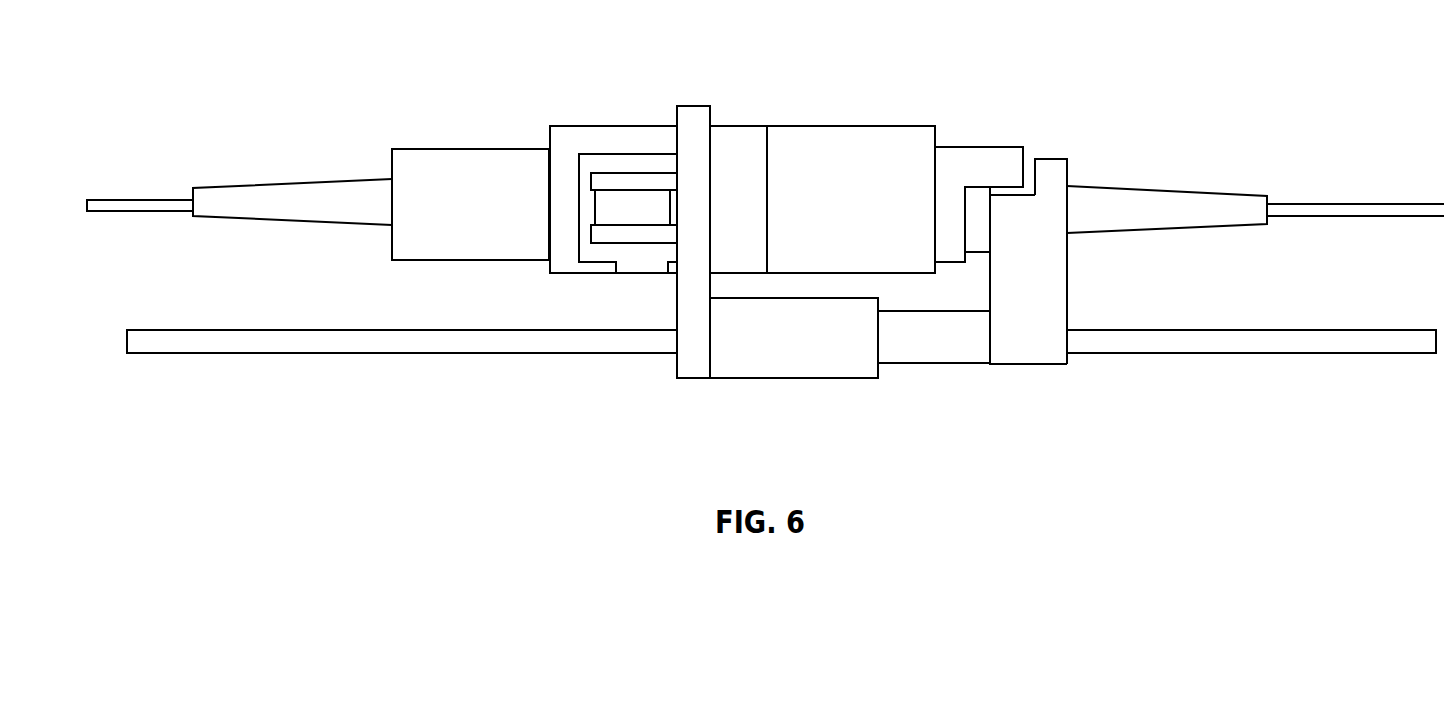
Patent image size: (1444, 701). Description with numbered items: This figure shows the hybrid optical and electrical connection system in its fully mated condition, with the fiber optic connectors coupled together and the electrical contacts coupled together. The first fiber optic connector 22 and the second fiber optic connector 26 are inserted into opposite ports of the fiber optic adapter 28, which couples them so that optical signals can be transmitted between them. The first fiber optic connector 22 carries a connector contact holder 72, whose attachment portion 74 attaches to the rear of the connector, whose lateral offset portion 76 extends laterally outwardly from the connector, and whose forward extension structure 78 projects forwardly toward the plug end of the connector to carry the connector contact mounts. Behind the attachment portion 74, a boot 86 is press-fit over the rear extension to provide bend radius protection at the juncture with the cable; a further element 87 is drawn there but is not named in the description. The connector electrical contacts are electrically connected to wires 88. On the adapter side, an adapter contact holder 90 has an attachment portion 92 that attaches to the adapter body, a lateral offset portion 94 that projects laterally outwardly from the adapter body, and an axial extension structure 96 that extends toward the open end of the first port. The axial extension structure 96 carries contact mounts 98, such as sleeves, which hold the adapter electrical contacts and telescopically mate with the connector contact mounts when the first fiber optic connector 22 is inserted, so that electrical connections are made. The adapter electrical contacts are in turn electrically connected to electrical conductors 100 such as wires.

The first fiber optic connector 22 is at (971, 146).
The second fiber optic connector 26 is at (476, 147).
The fiber optic adapter 28 is at (855, 124).
The connector contact holder 72 is at (1031, 366).
The attachment portion 74 is at (1069, 170).
The lateral offset portion 76 is at (1069, 283).
The forward extension structure 78 is at (940, 366).
The boot 86 is at (1178, 190).
The optical fiber 87 is at (1340, 204).
The wires 88 is at (1262, 353).
The adapter contact holder 90 is at (694, 104).
The attachment portion 92 is at (677, 115).
The lateral offset portion 94 is at (677, 285).
The axial extension structure 96 is at (762, 380).
The contact mounts 98 is at (898, 366).
The electrical conductors 100 is at (362, 355).